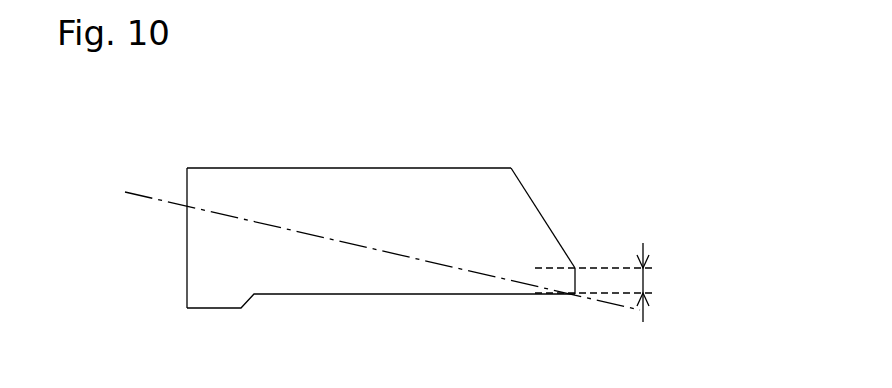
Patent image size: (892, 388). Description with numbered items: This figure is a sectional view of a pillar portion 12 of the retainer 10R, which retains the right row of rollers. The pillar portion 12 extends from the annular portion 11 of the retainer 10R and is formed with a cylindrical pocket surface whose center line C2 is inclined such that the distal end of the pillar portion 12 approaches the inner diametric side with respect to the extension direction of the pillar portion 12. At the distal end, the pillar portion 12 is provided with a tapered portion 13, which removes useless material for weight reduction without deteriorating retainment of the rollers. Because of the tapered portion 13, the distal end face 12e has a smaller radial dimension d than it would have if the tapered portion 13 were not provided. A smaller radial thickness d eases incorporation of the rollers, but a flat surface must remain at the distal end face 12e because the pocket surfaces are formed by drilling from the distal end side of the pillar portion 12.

The retainer 10R is at (197, 143).
The pillar portion 12 is at (360, 176).
The tapered portion 13 is at (533, 200).
The distal end face 12e is at (577, 283).
The annular portion 11 is at (213, 304).
The center line C2 is at (172, 203).
The radial dimension d is at (645, 281).